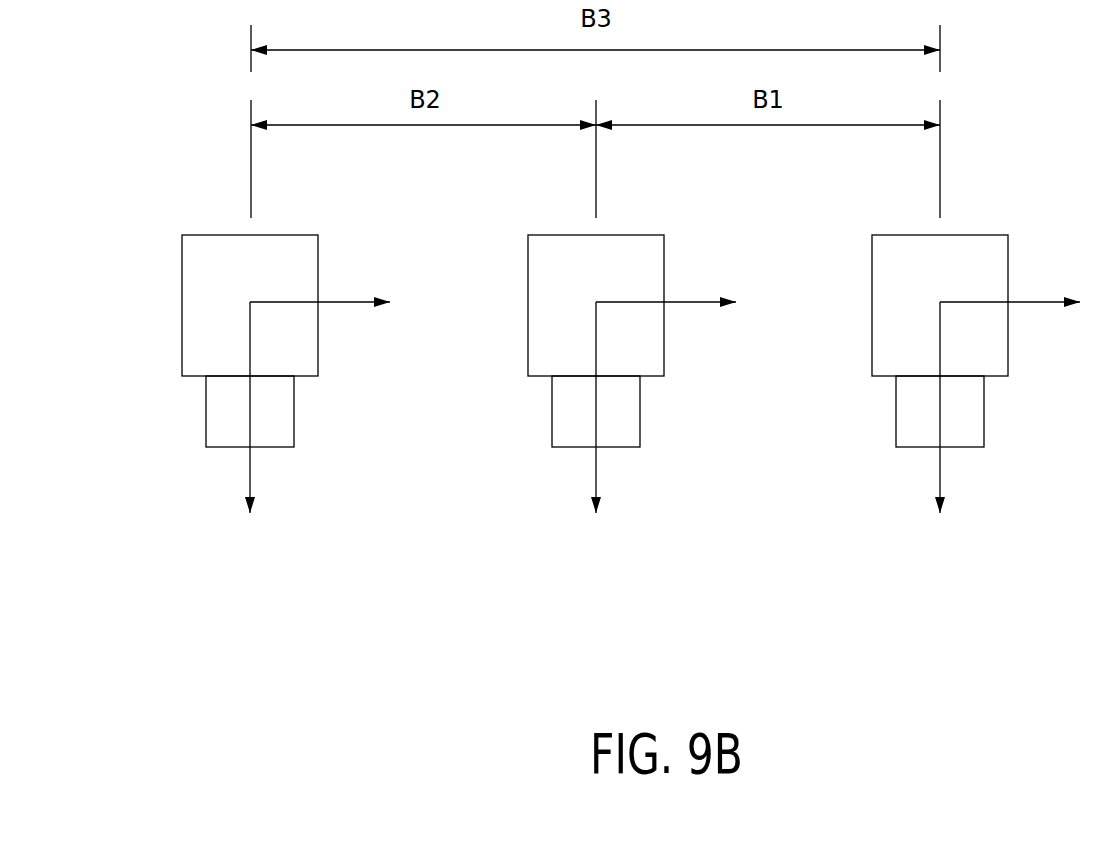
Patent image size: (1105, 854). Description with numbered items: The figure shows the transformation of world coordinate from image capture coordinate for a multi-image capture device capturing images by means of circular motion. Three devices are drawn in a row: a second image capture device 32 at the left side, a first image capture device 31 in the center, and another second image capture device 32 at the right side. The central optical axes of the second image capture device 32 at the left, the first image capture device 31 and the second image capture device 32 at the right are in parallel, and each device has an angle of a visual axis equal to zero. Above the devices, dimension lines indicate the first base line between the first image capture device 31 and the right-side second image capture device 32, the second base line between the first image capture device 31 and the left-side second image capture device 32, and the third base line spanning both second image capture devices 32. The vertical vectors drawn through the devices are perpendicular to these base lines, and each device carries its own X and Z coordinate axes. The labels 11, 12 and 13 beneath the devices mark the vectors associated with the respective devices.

The first image capturing device 11 is at (986, 435).
The second image capturing device 12 is at (642, 435).
The third image capturing device 13 is at (296, 435).
The first image capture device 31 is at (563, 272).
The second image capture device 32 is at (217, 273).